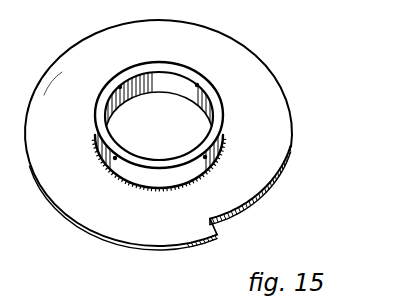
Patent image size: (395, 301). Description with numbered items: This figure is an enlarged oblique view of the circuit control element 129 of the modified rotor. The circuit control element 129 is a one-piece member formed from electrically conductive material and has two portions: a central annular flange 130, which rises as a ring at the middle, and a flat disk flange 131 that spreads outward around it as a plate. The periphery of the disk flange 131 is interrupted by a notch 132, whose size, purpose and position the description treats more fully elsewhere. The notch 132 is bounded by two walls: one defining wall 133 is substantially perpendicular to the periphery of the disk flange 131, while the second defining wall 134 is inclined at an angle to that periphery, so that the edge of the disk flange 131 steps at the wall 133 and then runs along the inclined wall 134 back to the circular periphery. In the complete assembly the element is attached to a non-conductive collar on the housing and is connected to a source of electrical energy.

The circuit control element 129 is at (300, 152).
The annular flange 130 is at (137, 63).
The disk flange 131 is at (265, 87).
The notch 132 is at (228, 219).
The defining wall 133 is at (219, 233).
The second defining wall 134 is at (262, 200).